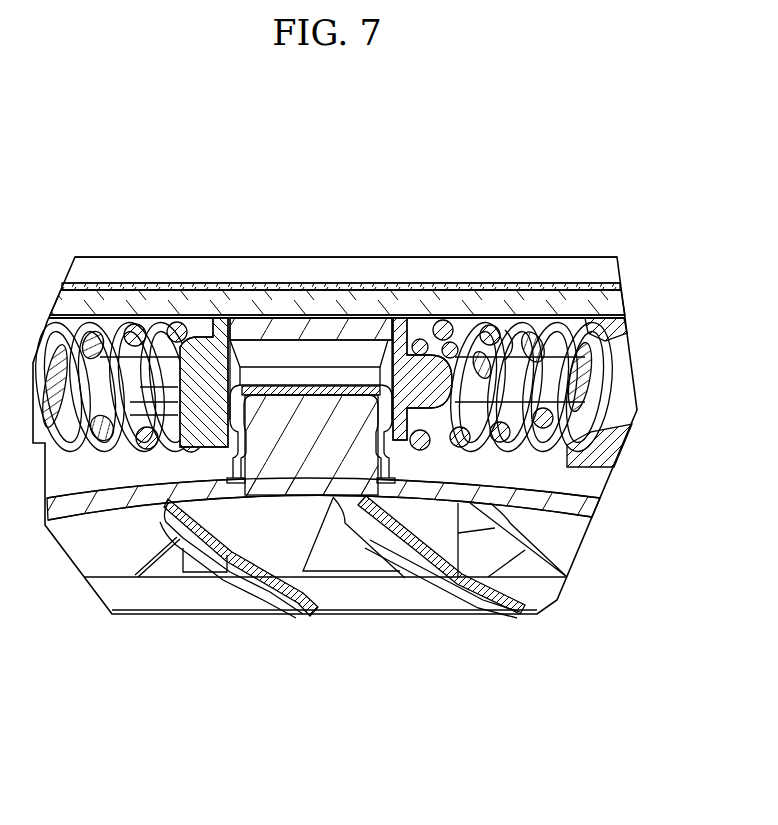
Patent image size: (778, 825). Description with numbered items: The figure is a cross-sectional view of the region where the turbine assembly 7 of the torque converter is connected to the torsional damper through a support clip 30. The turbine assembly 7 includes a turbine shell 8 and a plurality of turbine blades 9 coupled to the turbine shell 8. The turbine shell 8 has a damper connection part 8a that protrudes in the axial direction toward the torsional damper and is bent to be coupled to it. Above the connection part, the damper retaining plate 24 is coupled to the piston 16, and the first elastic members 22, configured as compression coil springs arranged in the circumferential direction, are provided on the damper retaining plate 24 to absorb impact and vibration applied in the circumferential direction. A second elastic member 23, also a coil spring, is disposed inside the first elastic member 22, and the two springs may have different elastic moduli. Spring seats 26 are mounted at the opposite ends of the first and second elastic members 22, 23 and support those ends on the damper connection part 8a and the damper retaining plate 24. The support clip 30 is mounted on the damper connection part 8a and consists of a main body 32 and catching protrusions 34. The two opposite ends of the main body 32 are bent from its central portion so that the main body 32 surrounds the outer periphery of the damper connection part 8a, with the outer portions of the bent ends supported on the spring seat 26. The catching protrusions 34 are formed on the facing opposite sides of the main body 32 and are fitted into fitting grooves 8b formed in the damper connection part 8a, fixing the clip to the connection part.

The turbine assembly 7 is at (574, 492).
The turbine shell 8 is at (567, 510).
The damper connection part 8a is at (280, 423).
The fitting groove 8b is at (237, 456).
The turbine blade 9 is at (287, 590).
The piston 16 is at (330, 270).
The first elastic member 22 is at (143, 322).
The second elastic member 23 is at (512, 345).
The damper retaining plate 24 is at (380, 307).
The spring seat 26 is at (205, 355).
The support clip 30 is at (248, 689).
The main body 32 is at (312, 390).
The catching protrusion 34 is at (187, 540).